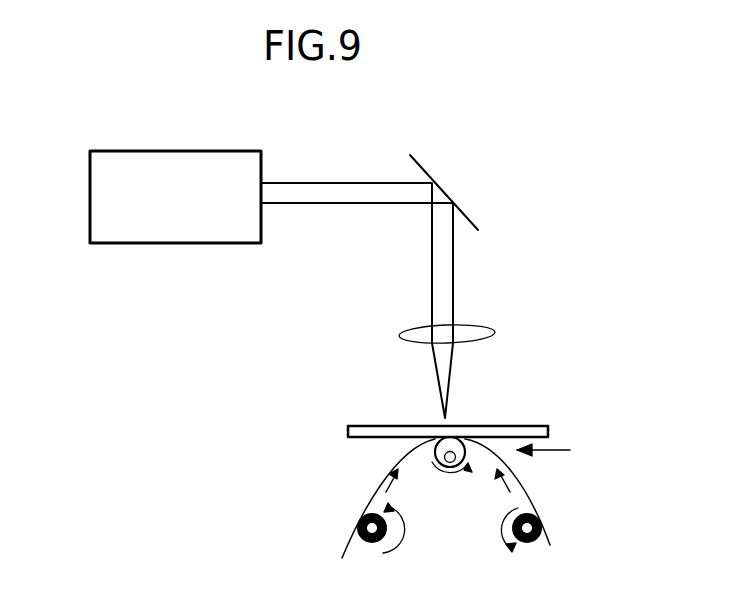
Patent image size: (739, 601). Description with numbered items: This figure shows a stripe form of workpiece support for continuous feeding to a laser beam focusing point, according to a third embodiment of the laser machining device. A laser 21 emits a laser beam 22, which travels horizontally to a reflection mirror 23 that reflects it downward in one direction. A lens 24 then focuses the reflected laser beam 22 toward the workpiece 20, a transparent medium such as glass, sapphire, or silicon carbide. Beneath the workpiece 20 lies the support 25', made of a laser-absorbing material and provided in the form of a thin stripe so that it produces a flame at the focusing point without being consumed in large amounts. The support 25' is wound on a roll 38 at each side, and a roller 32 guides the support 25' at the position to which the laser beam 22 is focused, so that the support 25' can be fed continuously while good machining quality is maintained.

The workpiece 20 is at (525, 426).
The laser 21 is at (153, 243).
The laser beam 22 is at (353, 183).
The reflection mirror 23 is at (443, 193).
The lens 24 is at (401, 336).
The support 25' is at (490, 498).
The roller 32 is at (434, 470).
The roll 38 is at (362, 540).